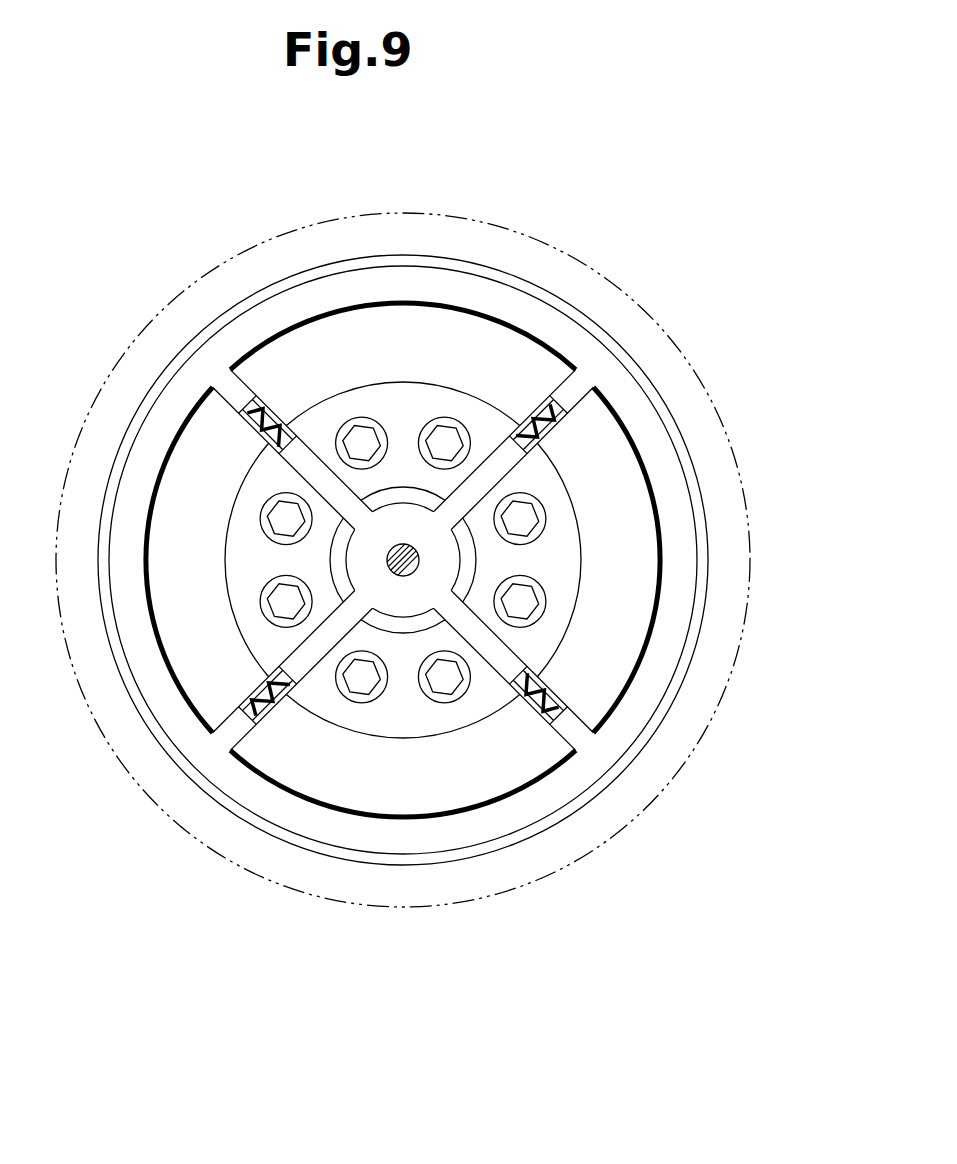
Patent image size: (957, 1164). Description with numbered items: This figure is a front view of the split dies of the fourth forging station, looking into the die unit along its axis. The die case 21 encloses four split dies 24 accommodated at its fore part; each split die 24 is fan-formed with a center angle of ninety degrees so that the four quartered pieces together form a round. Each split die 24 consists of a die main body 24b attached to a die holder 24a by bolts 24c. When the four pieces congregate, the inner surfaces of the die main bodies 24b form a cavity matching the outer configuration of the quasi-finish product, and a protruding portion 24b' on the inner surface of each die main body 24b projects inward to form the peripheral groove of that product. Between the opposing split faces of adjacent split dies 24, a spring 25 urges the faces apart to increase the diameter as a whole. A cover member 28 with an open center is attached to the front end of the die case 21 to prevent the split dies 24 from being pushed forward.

The die case 21 is at (527, 812).
The split die 24 is at (444, 558).
The die holder 24a is at (610, 473).
The die main body 24b is at (541, 560).
The protruding portion 24b' is at (594, 560).
The bolt 24c is at (541, 601).
The spring 25 is at (513, 440).
The cover member 28 is at (423, 907).